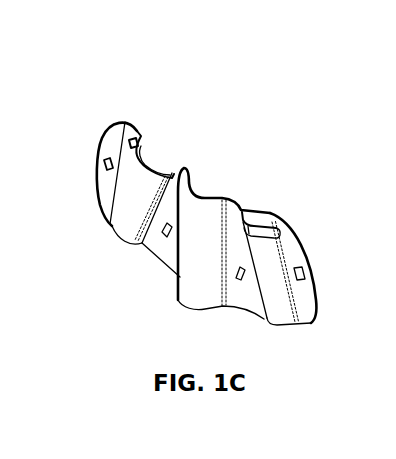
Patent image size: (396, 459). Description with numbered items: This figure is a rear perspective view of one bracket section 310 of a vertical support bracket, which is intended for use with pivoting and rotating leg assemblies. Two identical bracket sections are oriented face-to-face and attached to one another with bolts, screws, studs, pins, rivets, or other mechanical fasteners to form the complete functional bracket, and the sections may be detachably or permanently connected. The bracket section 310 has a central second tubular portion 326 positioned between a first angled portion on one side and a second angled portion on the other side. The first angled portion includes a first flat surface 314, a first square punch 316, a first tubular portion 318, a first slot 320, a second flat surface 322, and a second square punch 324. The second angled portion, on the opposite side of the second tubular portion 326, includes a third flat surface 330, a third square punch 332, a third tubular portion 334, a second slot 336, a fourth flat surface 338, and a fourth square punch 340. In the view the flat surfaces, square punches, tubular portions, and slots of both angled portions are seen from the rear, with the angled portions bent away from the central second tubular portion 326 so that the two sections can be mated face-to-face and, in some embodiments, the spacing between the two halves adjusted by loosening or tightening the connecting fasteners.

The bracket section 310 is at (159, 86).
The first flat surface 314 is at (298, 233).
The first square punch 316 is at (308, 272).
The first tubular portion 318 is at (282, 328).
The first slot 320 is at (257, 224).
The second flat surface 322 is at (239, 207).
The second square punch 324 is at (243, 281).
The second tubular portion 326 is at (193, 298).
The third flat surface 330 is at (148, 254).
The third square punch 332 is at (165, 238).
The third tubular portion 334 is at (114, 237).
The second slot 336 is at (148, 153).
The fourth flat surface 338 is at (125, 121).
The fourth square punch 340 is at (103, 158).